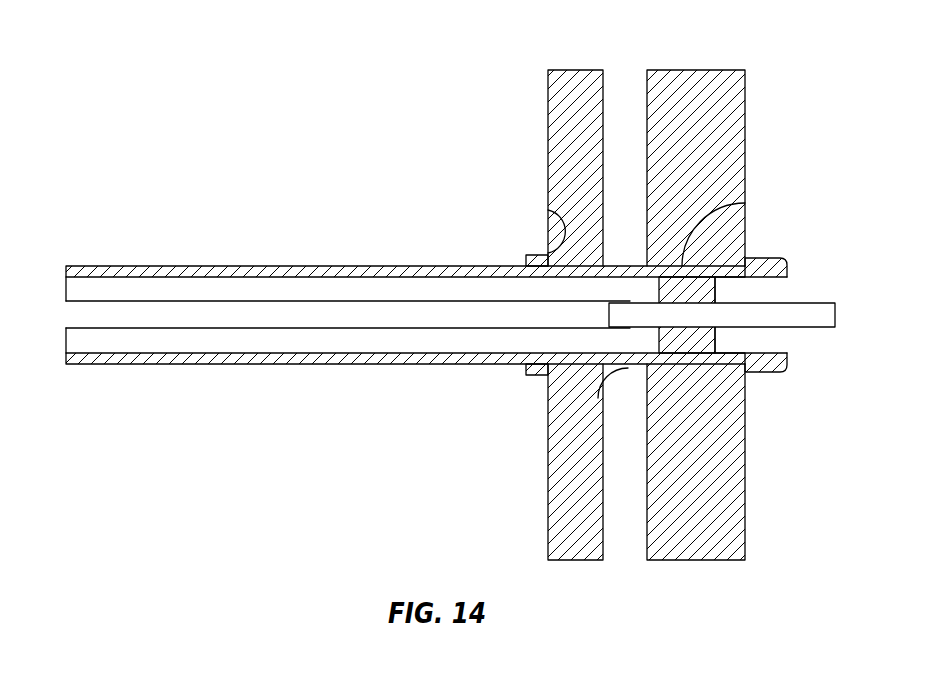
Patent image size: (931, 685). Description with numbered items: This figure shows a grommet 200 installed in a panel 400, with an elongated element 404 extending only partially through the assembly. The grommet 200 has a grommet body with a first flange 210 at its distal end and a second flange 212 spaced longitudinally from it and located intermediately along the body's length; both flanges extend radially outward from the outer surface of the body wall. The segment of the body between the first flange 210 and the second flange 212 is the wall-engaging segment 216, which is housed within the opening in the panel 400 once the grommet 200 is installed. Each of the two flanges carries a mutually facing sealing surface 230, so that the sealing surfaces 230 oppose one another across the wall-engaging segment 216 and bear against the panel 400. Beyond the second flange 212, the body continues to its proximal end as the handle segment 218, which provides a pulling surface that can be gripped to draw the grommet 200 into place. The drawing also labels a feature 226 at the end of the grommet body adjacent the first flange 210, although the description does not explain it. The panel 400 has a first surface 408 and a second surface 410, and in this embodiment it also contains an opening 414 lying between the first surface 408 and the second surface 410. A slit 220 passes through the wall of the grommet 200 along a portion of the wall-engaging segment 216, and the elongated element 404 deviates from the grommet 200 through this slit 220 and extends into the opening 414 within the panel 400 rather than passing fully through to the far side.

The grommet 200 is at (438, 291).
The first flange 210 is at (765, 257).
The second flange 212 is at (530, 256).
The wall-engaging segment 216 is at (745, 203).
The handle segment 218 is at (323, 266).
The slit 220 is at (63, 314).
The cavity 226 is at (717, 293).
The sealing surface 230 is at (548, 212).
The panel 400 is at (639, 282).
The elongated element 404 is at (812, 328).
The first surface 408 is at (745, 122).
The second surface 410 is at (548, 128).
The opening 414 is at (626, 106).